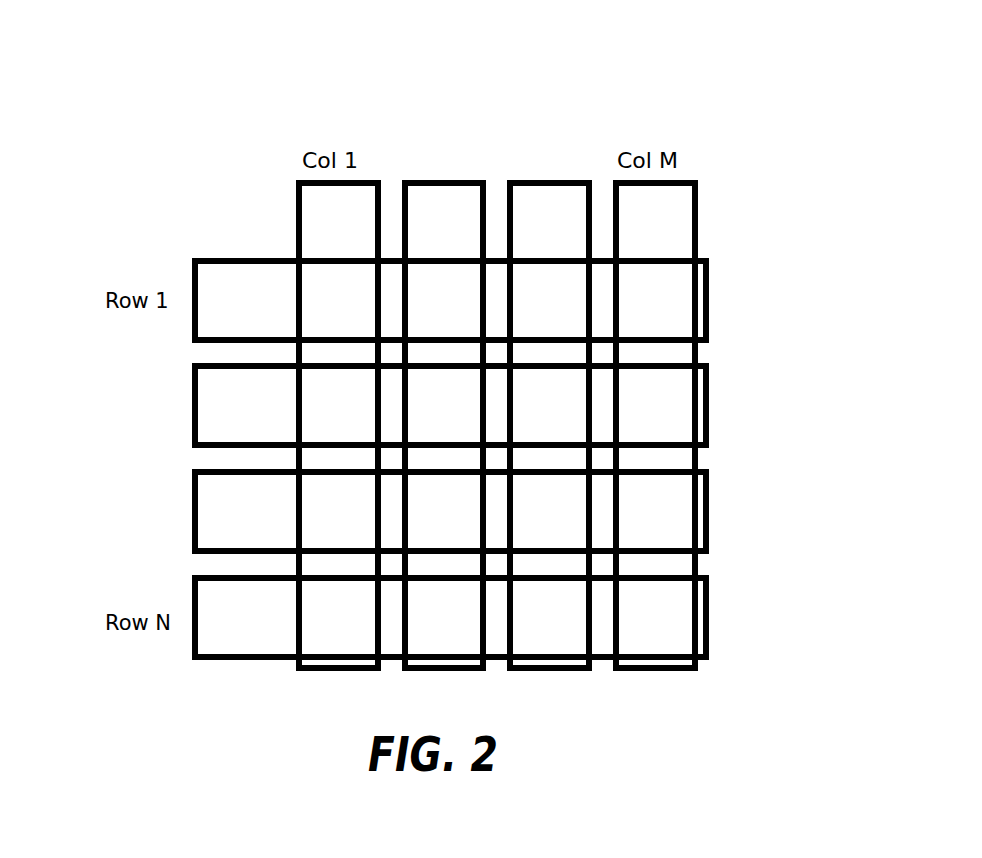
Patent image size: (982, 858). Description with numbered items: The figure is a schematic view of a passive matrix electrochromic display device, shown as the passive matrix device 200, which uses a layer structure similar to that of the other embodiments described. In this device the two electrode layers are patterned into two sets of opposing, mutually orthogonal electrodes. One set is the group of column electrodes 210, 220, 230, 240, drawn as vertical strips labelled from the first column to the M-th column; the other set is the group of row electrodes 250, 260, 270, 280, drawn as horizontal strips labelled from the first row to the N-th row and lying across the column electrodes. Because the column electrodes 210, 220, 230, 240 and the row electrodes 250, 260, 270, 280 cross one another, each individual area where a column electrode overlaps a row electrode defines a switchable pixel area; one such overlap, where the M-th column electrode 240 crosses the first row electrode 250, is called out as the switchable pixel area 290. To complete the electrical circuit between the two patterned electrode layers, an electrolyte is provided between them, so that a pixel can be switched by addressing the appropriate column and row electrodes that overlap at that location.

The passive matrix device 200 is at (800, 59).
The column electrode 210 is at (358, 192).
The column electrode 220 is at (462, 191).
The column electrode 230 is at (555, 195).
The column electrode 240 is at (678, 205).
The row electrode 250 is at (200, 328).
The row electrode 260 is at (200, 422).
The row electrode 270 is at (203, 530).
The row electrode 280 is at (220, 642).
The switchable pixel area 290 is at (680, 293).